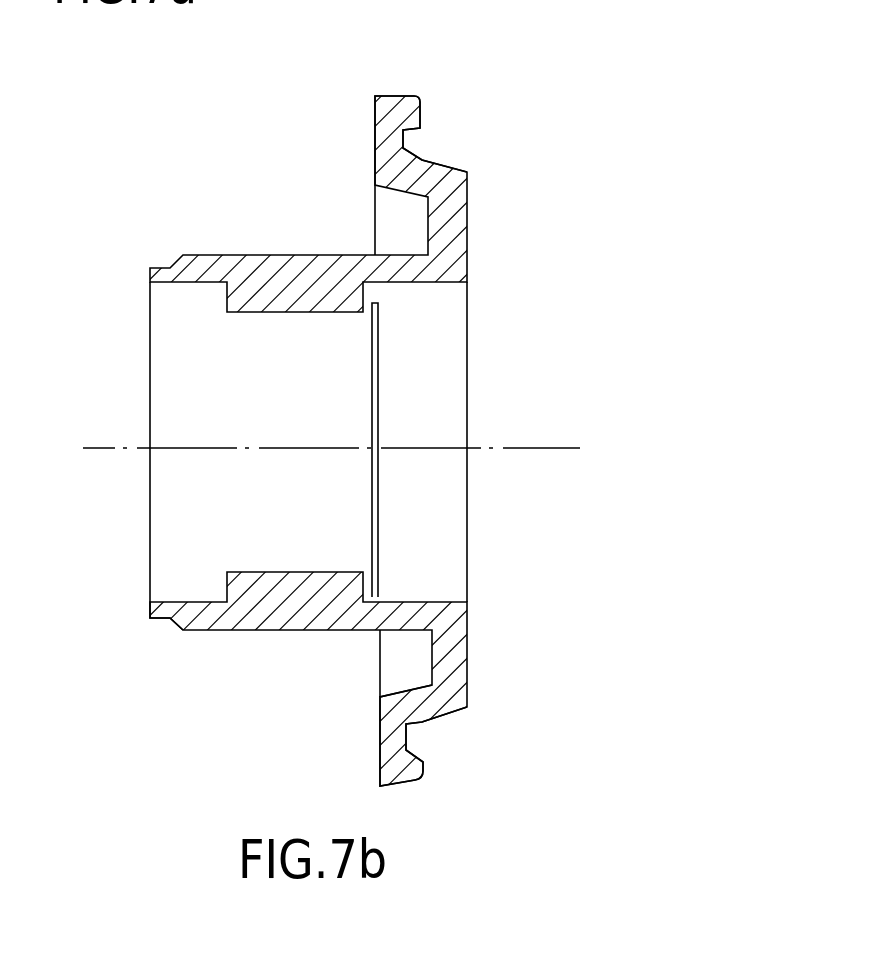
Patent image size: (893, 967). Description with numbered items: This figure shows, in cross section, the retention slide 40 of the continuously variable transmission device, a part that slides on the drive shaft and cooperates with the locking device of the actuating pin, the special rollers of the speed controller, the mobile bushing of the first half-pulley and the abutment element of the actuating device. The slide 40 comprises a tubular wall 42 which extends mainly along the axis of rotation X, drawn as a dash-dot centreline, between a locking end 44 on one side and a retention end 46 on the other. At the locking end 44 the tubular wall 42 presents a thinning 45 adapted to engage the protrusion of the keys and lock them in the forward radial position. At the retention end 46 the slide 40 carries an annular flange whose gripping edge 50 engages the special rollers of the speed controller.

The retention slide 40 is at (585, 222).
The tubular wall 42 is at (305, 598).
The locking end 44 is at (198, 228).
The thinning 45 is at (153, 612).
The retention end 46 is at (470, 743).
The gripping edge 50 is at (393, 109).
The axis of rotation X is at (563, 448).